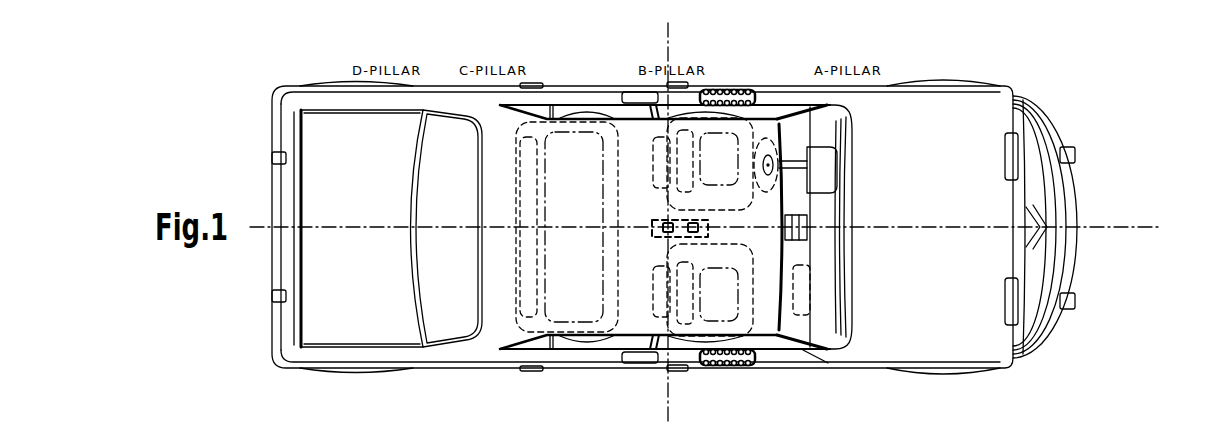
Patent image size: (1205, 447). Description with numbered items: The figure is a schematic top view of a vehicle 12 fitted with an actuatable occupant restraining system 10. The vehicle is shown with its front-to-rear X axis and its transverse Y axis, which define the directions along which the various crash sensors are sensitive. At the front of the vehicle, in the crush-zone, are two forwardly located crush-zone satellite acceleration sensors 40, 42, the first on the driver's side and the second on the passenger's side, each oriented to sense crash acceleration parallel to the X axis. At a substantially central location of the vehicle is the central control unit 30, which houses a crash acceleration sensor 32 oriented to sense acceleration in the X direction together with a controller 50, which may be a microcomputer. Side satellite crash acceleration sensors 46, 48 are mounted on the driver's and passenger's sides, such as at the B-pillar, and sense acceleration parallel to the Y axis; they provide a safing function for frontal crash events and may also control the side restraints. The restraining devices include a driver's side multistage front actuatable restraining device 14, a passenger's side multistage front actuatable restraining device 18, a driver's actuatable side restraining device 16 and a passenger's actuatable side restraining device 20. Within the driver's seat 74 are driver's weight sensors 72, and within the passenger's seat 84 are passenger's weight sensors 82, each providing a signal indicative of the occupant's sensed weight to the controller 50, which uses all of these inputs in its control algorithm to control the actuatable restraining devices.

The actuatable occupant restraining system 10 is at (1016, 59).
The vehicle 12 is at (863, 357).
The driver's side, multistage, front actuatable restraining device 14 is at (761, 118).
The driver's actuatable side restraining device 16 is at (722, 90).
The passenger's side, multistage, front actuatable restraining device 18 is at (795, 353).
The passenger's actuatable side restraining device 20 is at (717, 367).
The central control unit 30 is at (632, 252).
The crash acceleration sensor 32 is at (665, 222).
The crush-zone satellite acceleration sensor 40 is at (1015, 165).
The crush-zone satellite acceleration sensor 42 is at (1015, 290).
The driver's side-satellite crash acceleration sensor 46 is at (642, 97).
The passenger's side-satellite crash acceleration sensor 48 is at (637, 362).
The controller 50 is at (697, 223).
The driver's weight sensors 72 is at (730, 92).
The driver's seat 74 is at (757, 207).
The passenger's weight sensors 82 is at (723, 293).
The passenger's seat 84 is at (755, 257).
The vehicle X-axis X is at (1097, 222).
The vehicle Y-axis Y is at (667, 50).